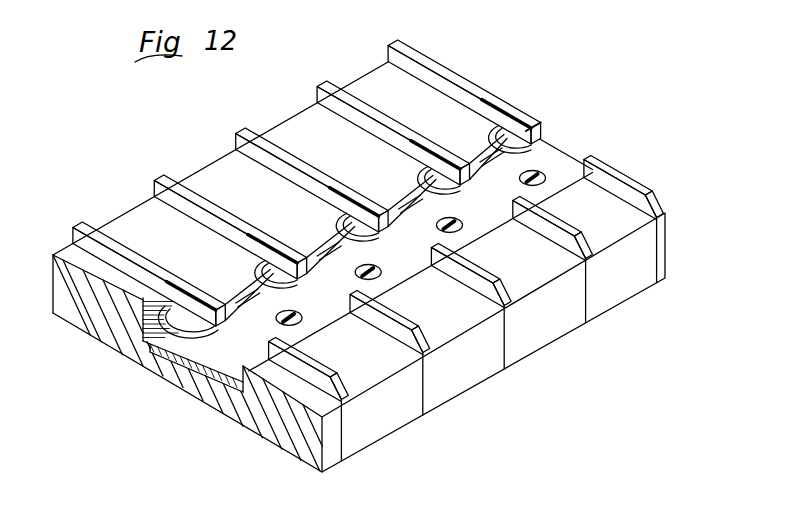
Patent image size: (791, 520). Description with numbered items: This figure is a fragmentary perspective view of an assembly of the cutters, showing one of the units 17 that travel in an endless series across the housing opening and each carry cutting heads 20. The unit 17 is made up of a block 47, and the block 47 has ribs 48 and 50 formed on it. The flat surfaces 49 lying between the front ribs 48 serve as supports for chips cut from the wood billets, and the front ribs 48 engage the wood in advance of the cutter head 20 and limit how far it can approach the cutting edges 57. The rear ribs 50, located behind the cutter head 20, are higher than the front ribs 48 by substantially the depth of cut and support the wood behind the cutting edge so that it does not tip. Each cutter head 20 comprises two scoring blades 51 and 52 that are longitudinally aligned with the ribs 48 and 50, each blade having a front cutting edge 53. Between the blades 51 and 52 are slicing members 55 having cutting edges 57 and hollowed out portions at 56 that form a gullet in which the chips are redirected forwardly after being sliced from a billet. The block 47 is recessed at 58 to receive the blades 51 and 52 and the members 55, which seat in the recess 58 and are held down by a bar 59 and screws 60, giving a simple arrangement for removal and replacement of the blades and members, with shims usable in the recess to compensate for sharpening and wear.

The unit 17 is at (347, 262).
The cutting head 20 is at (288, 183).
The block 47 is at (293, 437).
The rib 48 is at (295, 368).
The flat surface 49 is at (357, 352).
The rib 50 is at (87, 242).
The scoring blade 51 is at (424, 156).
The scoring blade 52 is at (541, 136).
The front cutting edge 53 is at (533, 124).
The slicing member 55 is at (481, 144).
The hollowed out portion 56 is at (328, 252).
The cutting edge 57 is at (248, 281).
The recess 58 is at (178, 356).
The bar 59 is at (418, 255).
The screw 60 is at (536, 175).